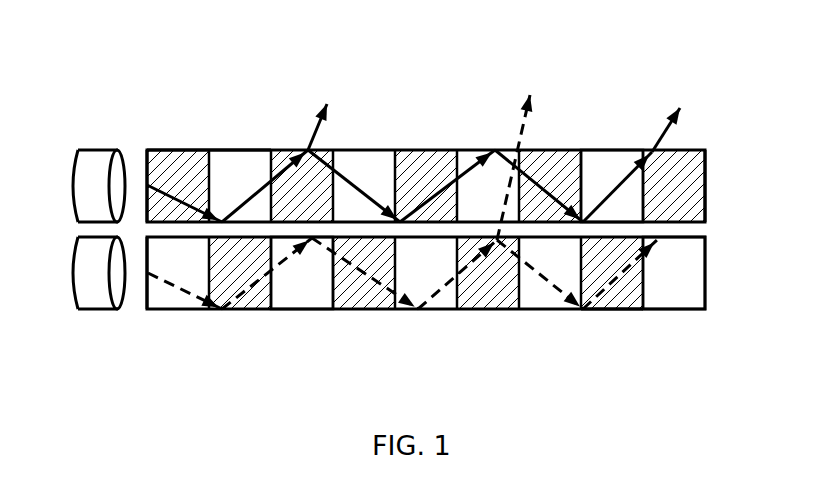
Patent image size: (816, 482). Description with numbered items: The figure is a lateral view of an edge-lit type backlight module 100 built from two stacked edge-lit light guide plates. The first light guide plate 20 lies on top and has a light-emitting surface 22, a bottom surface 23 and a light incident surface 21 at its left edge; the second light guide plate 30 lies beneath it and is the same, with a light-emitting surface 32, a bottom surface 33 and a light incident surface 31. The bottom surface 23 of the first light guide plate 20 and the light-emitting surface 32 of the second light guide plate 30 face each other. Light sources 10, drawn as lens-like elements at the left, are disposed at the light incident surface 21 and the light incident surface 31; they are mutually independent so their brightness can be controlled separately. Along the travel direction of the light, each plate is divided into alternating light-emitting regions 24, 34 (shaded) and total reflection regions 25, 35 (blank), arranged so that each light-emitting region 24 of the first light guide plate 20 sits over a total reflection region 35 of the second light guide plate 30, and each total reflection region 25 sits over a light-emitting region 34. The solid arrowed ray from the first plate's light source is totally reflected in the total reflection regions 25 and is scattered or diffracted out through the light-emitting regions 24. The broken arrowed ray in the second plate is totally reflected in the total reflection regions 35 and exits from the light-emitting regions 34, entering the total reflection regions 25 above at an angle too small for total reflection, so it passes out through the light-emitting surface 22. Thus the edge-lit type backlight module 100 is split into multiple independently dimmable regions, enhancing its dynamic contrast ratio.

The edge-lit type backlight module 100 is at (401, 204).
The light source 10 is at (63, 182).
The first light guide plate 20 is at (422, 117).
The light incident surface 21 is at (140, 168).
The light-emitting surface 22 is at (243, 150).
The bottom surface 23 is at (700, 226).
The light-emitting region 24 is at (547, 160).
The total reflection region 25 is at (595, 160).
The second light guide plate 30 is at (430, 338).
The light incident surface 31 is at (144, 307).
The light-emitting surface 32 is at (681, 242).
The bottom surface 33 is at (628, 311).
The light-emitting region 34 is at (367, 290).
The total reflection region 35 is at (305, 292).